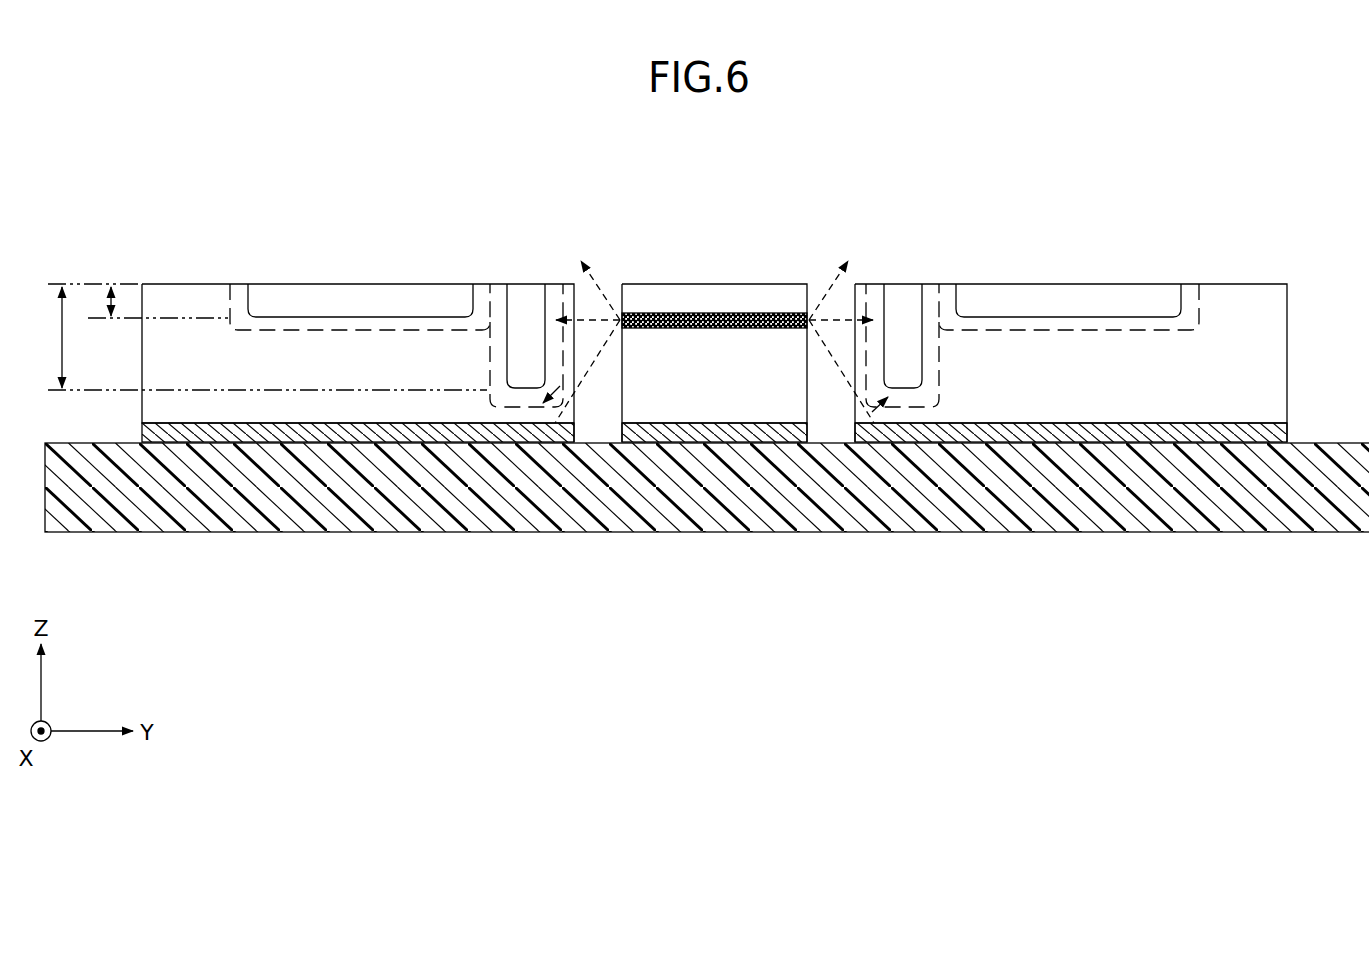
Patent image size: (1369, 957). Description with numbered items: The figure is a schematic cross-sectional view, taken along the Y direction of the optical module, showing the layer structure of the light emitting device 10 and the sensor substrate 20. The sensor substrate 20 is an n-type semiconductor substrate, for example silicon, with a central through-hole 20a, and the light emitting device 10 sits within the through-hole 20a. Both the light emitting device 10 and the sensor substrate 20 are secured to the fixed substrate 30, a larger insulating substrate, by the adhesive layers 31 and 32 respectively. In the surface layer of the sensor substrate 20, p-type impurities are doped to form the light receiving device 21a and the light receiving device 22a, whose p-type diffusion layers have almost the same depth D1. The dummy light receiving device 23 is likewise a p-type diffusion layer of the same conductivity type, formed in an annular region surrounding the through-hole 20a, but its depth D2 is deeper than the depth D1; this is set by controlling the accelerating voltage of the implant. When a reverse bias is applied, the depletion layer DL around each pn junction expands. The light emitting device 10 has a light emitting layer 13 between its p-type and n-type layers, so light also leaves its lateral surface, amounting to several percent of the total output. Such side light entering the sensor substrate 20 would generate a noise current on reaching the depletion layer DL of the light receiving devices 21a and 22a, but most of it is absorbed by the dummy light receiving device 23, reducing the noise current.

The light emitting device 10 is at (648, 283).
The light emitting layer 13 is at (767, 312).
The sensor substrate 20 is at (1247, 292).
The through-hole 20a is at (835, 413).
The light receiving device 21a is at (413, 297).
The light receiving device 22a is at (1017, 297).
The dummy light receiving device 23 is at (527, 297).
The fixed substrate 30 is at (1217, 497).
The adhesive layer 31 is at (700, 430).
The adhesive layer 32 is at (438, 430).
The depletion layer DL is at (490, 298).
The depth of p-type diffusion layer of light receiving devices D1 is at (139, 301).
The depth of p-type diffusion layer of dummy light receiving device D2 is at (254, 338).